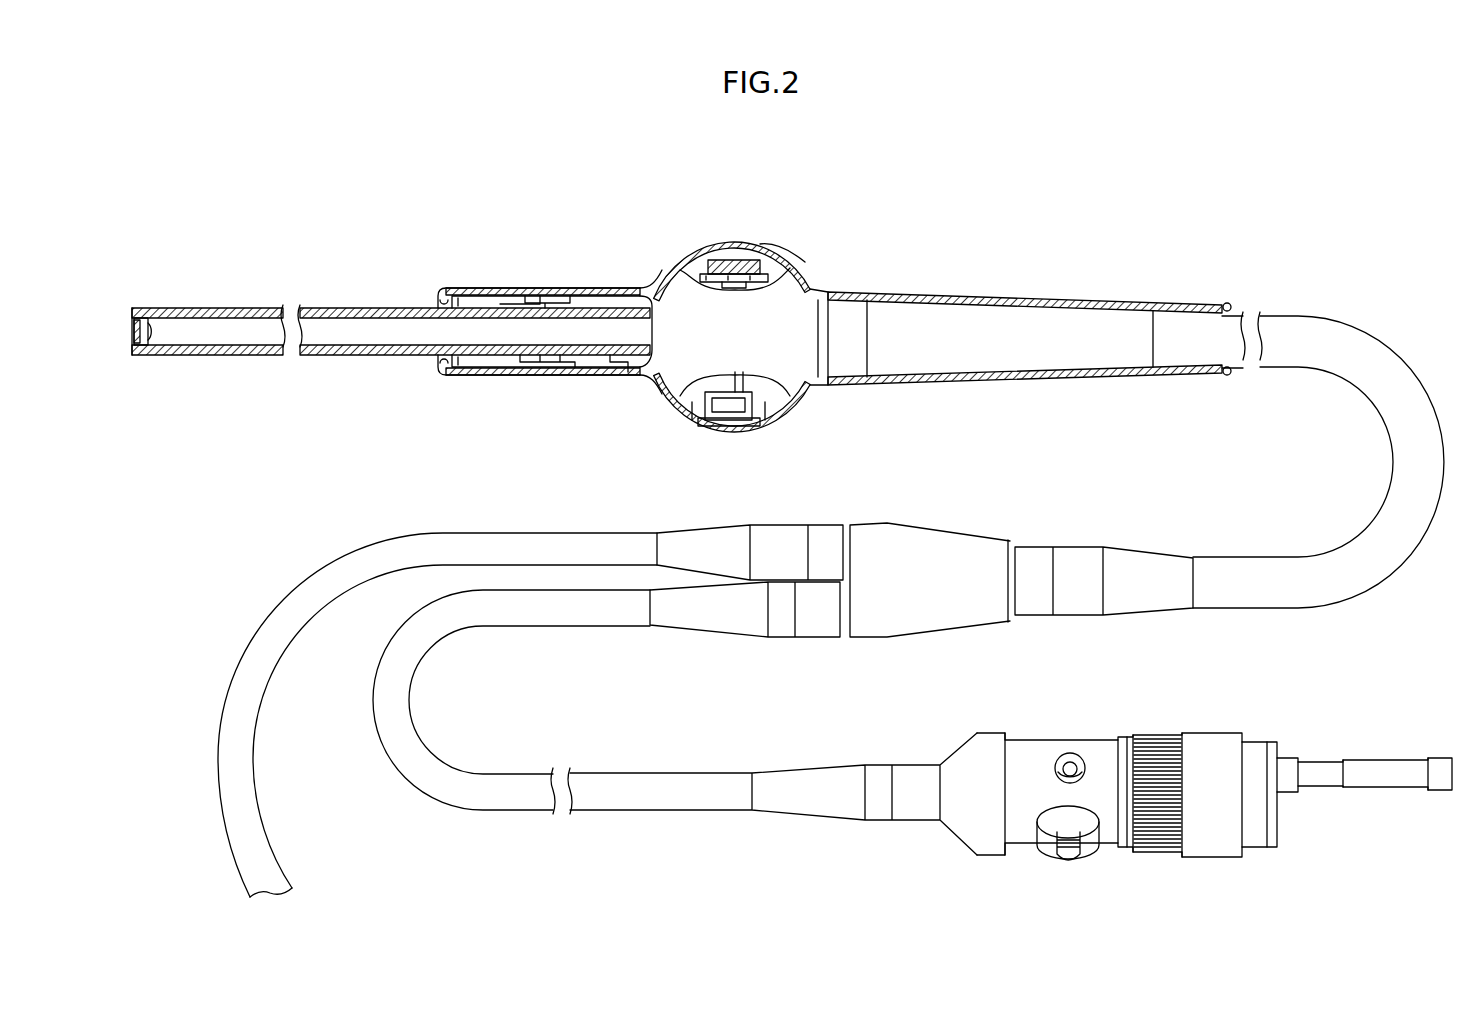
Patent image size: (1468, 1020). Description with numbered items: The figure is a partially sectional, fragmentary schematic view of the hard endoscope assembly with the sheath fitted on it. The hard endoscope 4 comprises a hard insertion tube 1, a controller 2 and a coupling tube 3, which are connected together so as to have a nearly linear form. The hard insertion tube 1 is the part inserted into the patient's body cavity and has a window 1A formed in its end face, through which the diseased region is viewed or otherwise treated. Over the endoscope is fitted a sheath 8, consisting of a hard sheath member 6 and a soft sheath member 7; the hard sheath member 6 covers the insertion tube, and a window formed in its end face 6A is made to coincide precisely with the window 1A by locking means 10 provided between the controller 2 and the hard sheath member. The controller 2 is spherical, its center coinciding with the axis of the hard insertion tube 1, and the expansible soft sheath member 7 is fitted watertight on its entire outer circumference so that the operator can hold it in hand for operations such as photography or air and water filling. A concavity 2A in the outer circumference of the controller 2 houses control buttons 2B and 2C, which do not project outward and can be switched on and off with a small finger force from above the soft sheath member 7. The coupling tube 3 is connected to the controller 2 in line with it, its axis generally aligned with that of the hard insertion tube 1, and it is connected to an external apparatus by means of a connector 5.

The hard insertion tube 1 is at (364, 337).
The window 1A is at (138, 334).
The hard sheath member 6 is at (220, 310).
The end face of the hard sheath member 6A is at (130, 345).
The sheath 8 is at (412, 292).
The locking means 10 is at (577, 378).
The soft sheath member 7 is at (647, 390).
The controller 2 is at (795, 388).
The concavity 2A is at (716, 243).
The control button 2B is at (768, 243).
The control button 2C is at (758, 428).
The hard endoscope 4 is at (1337, 428).
The coupling tube 3 is at (1325, 610).
The connector 5 is at (1160, 852).